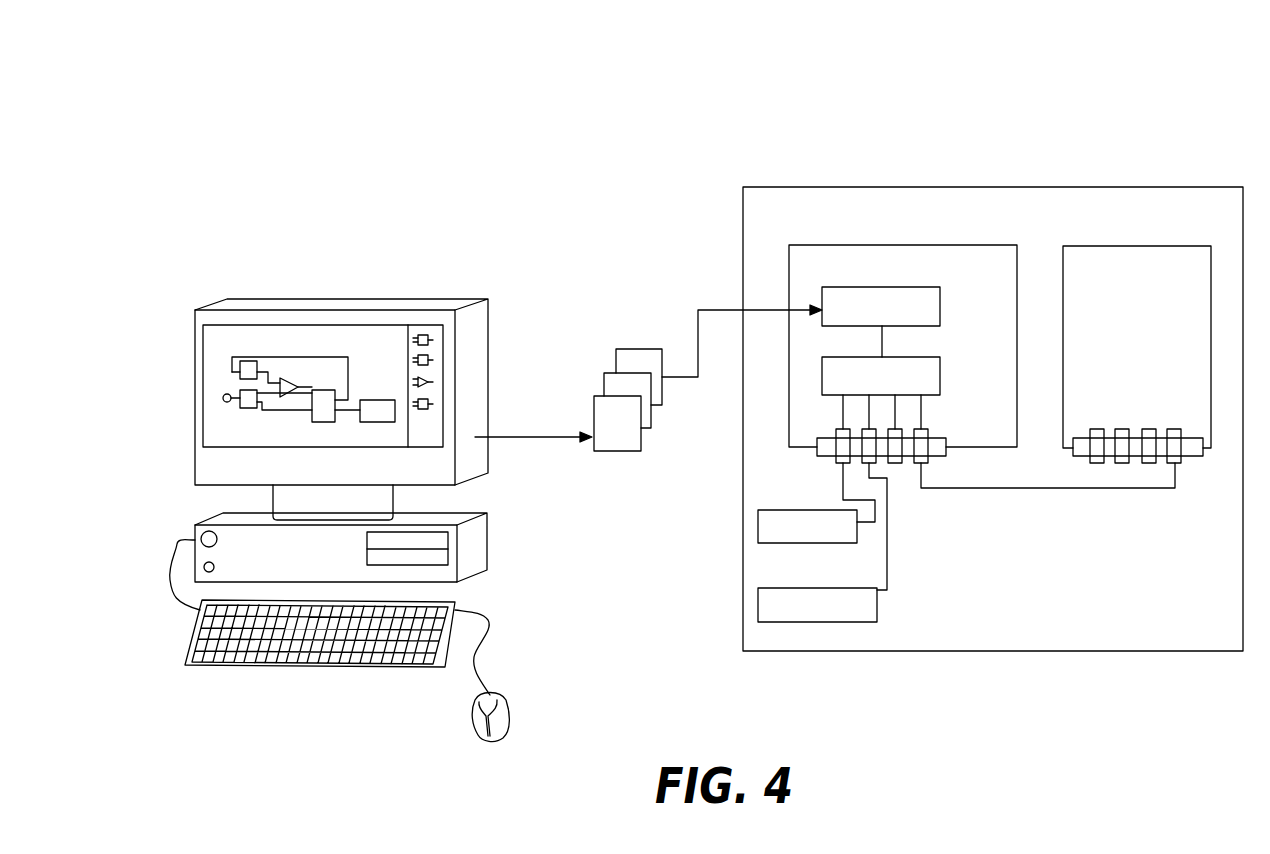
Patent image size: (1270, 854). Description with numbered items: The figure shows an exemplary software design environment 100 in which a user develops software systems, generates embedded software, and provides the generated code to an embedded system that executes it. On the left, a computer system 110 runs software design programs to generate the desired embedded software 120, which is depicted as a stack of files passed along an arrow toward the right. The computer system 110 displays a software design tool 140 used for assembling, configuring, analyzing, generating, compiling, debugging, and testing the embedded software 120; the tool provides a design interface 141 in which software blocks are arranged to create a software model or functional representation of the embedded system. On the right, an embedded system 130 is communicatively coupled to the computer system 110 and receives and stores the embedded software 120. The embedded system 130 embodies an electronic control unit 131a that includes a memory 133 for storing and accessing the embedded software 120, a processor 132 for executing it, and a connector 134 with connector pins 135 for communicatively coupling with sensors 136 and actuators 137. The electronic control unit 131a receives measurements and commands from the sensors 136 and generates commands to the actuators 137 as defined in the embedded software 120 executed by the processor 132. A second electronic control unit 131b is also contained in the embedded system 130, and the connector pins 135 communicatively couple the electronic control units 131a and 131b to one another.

The software design environment 100 is at (366, 119).
The computer system 110 is at (318, 300).
The embedded software 120 is at (633, 349).
The embedded system 130 is at (1143, 199).
The electronic control unit 131a is at (808, 262).
The second electronic control unit 131b is at (1077, 262).
The processor 132 is at (928, 380).
The memory 133 is at (928, 297).
The connector 134 is at (947, 450).
The connector pins 135 is at (925, 466).
The sensors 136 is at (857, 530).
The actuators 137 is at (877, 597).
The software design tool 140 is at (237, 322).
The design interface 141 is at (382, 364).